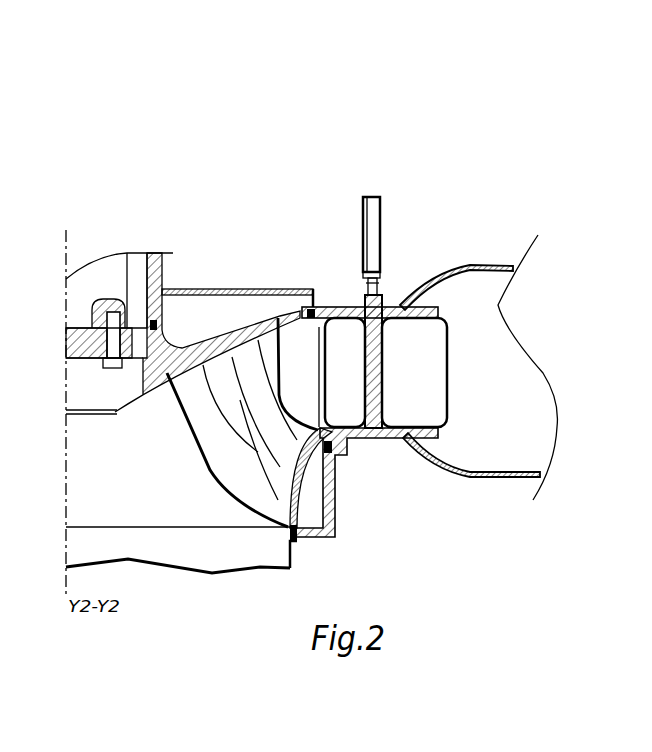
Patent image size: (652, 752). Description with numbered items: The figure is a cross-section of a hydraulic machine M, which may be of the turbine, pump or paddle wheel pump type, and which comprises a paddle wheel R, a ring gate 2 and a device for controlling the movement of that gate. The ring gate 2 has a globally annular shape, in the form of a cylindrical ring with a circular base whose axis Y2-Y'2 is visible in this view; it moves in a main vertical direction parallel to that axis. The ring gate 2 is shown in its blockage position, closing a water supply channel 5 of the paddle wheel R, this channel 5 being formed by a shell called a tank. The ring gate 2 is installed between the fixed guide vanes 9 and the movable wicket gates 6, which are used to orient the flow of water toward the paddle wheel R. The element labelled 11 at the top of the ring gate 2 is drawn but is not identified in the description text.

The hydraulic machine M is at (189, 229).
The ring gate 2 is at (363, 299).
The water supply channel 5 is at (478, 367).
The movable wicket gates 6 is at (345, 372).
The fixed guide vanes 9 is at (414, 372).
The sensor probe 11 is at (427, 191).
The paddle wheel R is at (220, 448).